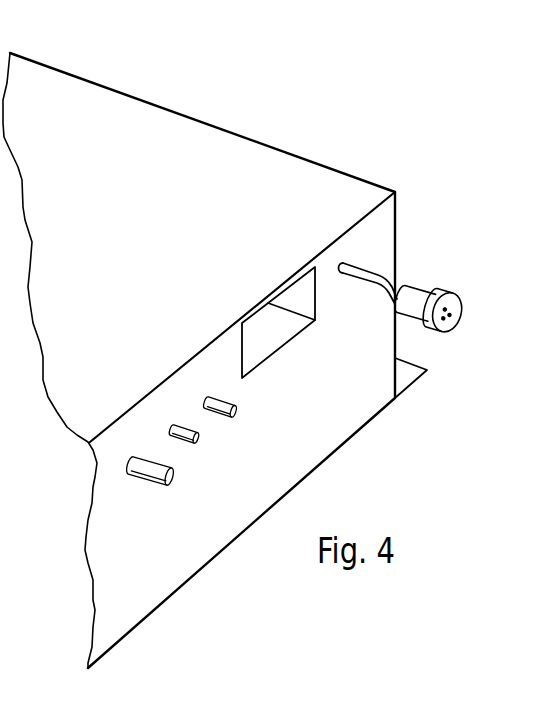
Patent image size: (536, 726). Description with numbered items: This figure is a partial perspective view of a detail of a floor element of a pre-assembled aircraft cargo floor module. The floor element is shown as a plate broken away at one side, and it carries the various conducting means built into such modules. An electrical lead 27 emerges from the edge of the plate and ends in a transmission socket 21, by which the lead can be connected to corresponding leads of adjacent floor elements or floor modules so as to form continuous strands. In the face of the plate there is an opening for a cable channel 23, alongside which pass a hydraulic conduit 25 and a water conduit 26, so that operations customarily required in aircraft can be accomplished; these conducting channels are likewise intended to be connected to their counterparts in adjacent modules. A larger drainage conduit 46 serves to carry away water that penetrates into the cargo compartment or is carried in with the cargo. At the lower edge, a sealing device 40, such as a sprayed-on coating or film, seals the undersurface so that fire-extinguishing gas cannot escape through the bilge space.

The transmission socket 21 is at (419, 297).
The cable channel 23 is at (271, 336).
The hydraulic conduit 25 is at (205, 402).
The water conduit 26 is at (173, 432).
The electrical lead 27 is at (357, 280).
The sealing device 40 is at (408, 377).
The drainage conduit 46 is at (143, 481).